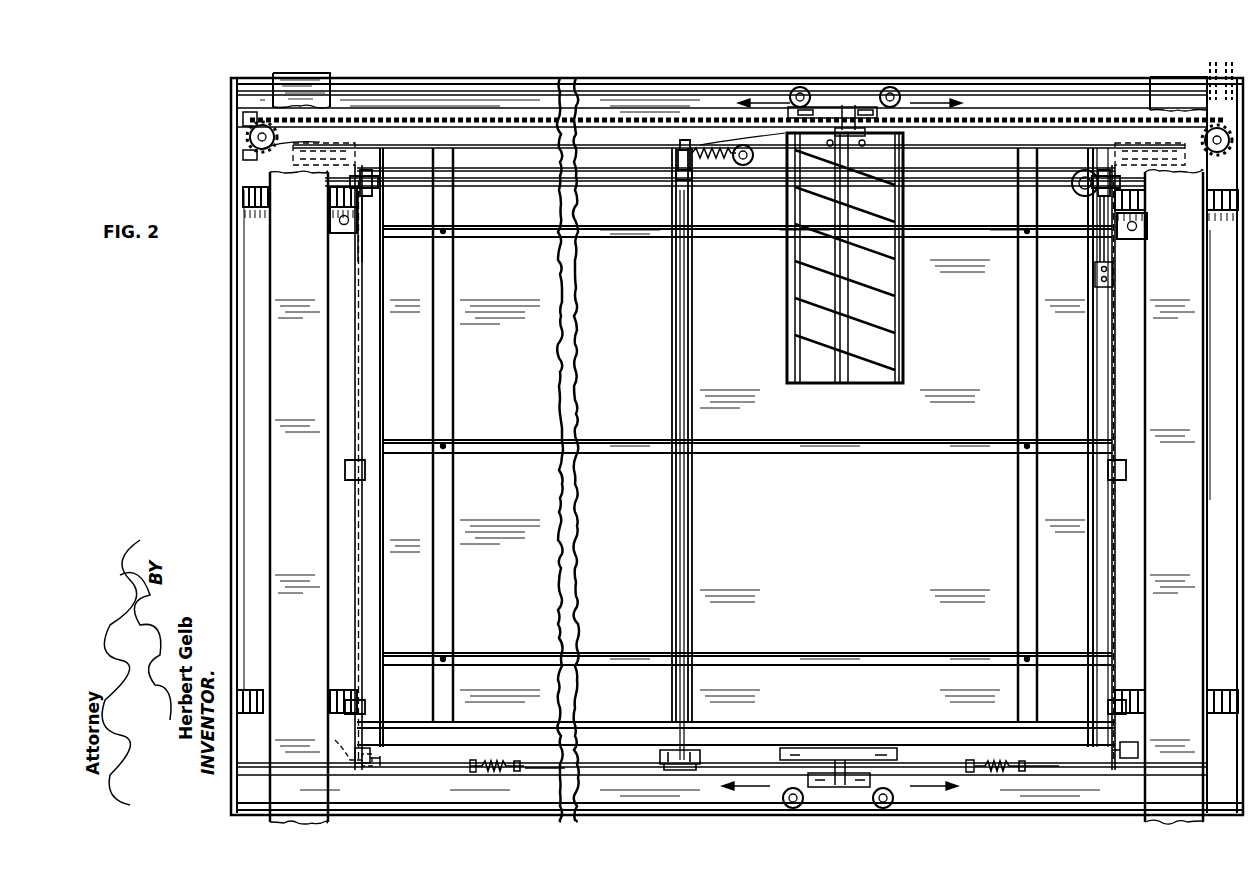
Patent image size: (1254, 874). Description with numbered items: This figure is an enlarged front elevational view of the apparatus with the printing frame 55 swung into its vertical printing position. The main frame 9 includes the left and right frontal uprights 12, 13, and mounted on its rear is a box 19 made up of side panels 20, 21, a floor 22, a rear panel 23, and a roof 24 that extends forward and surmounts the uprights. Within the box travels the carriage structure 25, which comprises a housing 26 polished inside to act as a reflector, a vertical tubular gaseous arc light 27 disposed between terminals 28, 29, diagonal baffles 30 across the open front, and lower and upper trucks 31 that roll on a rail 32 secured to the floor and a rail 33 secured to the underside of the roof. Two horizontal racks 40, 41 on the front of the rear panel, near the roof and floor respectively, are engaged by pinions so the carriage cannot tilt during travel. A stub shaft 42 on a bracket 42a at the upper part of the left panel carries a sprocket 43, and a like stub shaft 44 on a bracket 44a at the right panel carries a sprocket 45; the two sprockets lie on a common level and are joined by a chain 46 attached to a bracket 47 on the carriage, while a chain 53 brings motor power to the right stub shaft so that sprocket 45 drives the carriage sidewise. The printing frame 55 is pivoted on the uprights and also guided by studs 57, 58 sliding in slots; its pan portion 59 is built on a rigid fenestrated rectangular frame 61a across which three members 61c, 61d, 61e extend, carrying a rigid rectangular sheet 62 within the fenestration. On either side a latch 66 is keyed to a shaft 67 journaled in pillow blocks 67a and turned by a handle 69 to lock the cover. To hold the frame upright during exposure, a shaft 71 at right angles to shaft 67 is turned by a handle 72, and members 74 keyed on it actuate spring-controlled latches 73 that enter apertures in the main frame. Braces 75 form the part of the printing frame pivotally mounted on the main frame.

The main frame 9 is at (279, 468).
The frontal upright 12 is at (283, 446).
The frontal upright 13 is at (1190, 372).
The box 19 is at (230, 318).
The side panel 20 is at (237, 360).
The side panel 21 is at (1241, 479).
The floor 22 is at (596, 819).
The rear panel 23 is at (250, 387).
The roof 24 is at (683, 84).
The carriage structure 25 is at (907, 339).
The housing 26 is at (793, 307).
The tubular gaseous arc light 27 is at (896, 296).
The terminal 28 is at (842, 786).
The terminal 29 is at (847, 104).
The baffles 30 is at (800, 351).
The trucks 31 is at (820, 95).
The rail 32 is at (687, 815).
The rail 33 is at (708, 91).
The rack 40 is at (243, 198).
The rack 41 is at (256, 699).
The stub shaft 42 is at (243, 140).
The bracket 42a is at (245, 113).
The sprocket 43 is at (272, 135).
The stub shaft 44 is at (1210, 155).
The bracket 44a is at (1222, 208).
The sprocket 45 is at (1200, 139).
The chain 46 is at (1038, 106).
The bracket 47 is at (745, 147).
The chain 53 is at (1205, 68).
The printing frame 55 is at (366, 389).
The stud 57 is at (335, 740).
The stud 58 is at (1136, 750).
The pan portion 59 is at (398, 491).
The rigid fenestrated rectangular frame 61a is at (1093, 409).
The member 61c is at (453, 405).
The member 61d is at (693, 497).
The member 61e is at (1020, 468).
The rigid rectangular sheet 62 is at (868, 541).
The latch 66 is at (365, 175).
The shaft 67 is at (517, 188).
The pillow blocks 67a is at (362, 248).
The handle 69 is at (1083, 198).
The shaft 71 is at (682, 538).
The handle 72 is at (747, 170).
The spring-controlled latches 73 is at (510, 766).
The member 74 is at (700, 755).
The braces 75 is at (345, 620).